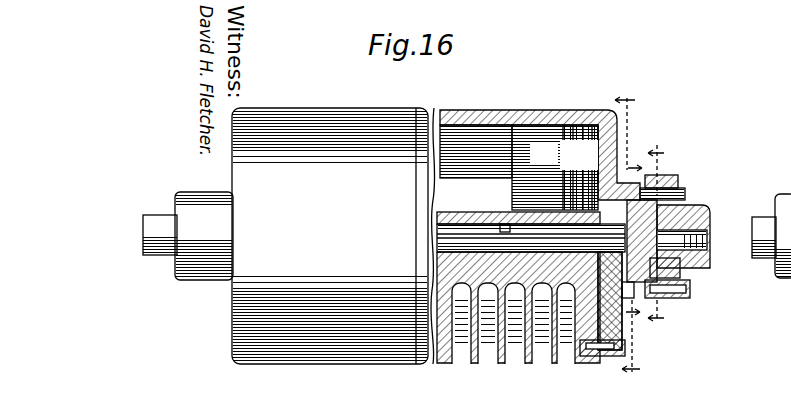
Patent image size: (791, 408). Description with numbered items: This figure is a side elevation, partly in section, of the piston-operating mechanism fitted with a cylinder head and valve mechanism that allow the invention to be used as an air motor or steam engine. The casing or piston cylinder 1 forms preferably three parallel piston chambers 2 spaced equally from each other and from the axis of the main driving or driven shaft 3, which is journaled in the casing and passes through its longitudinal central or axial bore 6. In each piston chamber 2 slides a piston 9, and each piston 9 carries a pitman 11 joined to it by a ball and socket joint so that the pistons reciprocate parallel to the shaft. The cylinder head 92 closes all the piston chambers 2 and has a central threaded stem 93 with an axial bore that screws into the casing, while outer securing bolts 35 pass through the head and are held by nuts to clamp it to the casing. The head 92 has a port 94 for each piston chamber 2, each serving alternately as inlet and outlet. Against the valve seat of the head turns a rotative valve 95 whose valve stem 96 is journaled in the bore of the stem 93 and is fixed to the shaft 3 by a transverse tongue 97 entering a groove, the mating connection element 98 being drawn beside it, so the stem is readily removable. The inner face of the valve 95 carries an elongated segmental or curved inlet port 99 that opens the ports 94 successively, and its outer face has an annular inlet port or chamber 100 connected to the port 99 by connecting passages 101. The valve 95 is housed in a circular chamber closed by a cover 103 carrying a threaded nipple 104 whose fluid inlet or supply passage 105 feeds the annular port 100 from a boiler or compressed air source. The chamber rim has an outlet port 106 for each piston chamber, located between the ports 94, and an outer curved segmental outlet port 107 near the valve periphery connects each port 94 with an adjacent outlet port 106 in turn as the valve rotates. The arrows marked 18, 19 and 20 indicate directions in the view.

The casing or piston cylinder 1 is at (448, 112).
The piston chambers 2 is at (622, 137).
The main driving or driven shaft 3 is at (163, 256).
The longitudinal central or axial bore 6 is at (504, 256).
The piston 9 is at (530, 136).
The pitman 11 is at (466, 162).
The direction arrow 18 is at (637, 228).
The direction arrow 19 is at (630, 241).
The direction arrow 20 is at (656, 235).
The outer securing bolts 35 is at (598, 358).
The cylinder head 92 is at (609, 116).
The central threaded stem 93 is at (562, 202).
The port 94 is at (588, 216).
The rotative valve 95 is at (682, 214).
The valve stem 96 is at (536, 240).
The transverse tongue 97 is at (505, 232).
The bushing 98 is at (490, 232).
The segmental or curved inlet port 99 is at (652, 180).
The annular inlet port or chamber 100 is at (668, 270).
The connecting passages 101 is at (672, 186).
The cover 103 is at (672, 300).
The nipple 104 is at (706, 224).
The fluid inlet or supply passage 105 is at (708, 244).
The outlet port 106 is at (624, 292).
The outer curved segmental outlet port 107 is at (634, 298).